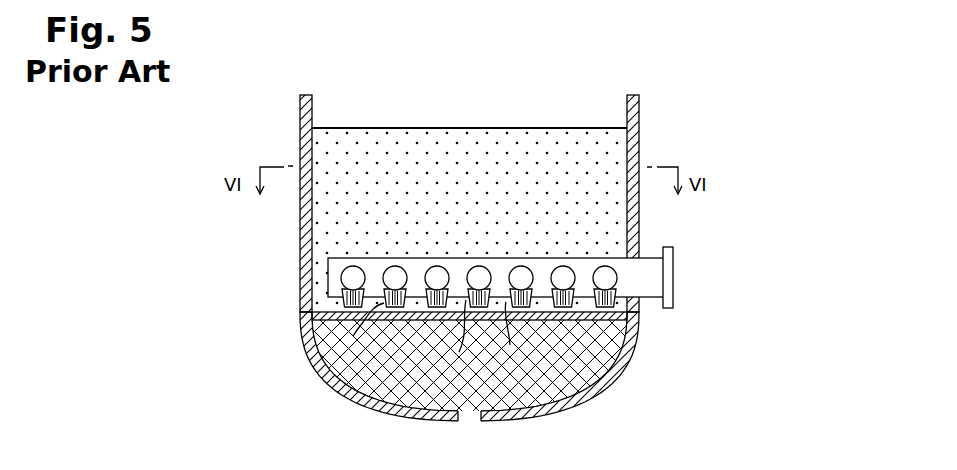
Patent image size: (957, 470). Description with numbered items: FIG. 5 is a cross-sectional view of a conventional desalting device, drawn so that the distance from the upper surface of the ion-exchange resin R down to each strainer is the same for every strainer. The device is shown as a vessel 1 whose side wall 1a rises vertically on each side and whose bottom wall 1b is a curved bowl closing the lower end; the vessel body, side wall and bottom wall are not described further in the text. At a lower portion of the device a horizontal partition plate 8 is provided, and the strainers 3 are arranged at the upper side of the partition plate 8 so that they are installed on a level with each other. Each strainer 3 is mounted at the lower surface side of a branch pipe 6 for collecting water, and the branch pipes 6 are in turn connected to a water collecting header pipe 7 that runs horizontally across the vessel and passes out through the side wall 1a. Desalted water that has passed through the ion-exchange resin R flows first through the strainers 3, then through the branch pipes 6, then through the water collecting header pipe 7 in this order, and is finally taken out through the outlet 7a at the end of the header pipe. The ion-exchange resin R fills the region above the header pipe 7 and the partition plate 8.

The vessel 1 is at (432, 275).
The side wall 1a is at (300, 233).
The bottom wall 1b is at (398, 416).
The strainer 3 is at (338, 305).
The branch pipe 6 is at (355, 264).
The water collecting header pipe 7 is at (490, 259).
The outlet 7a is at (674, 272).
The partition plate 8 is at (613, 366).
The ion-exchange resin R is at (487, 140).